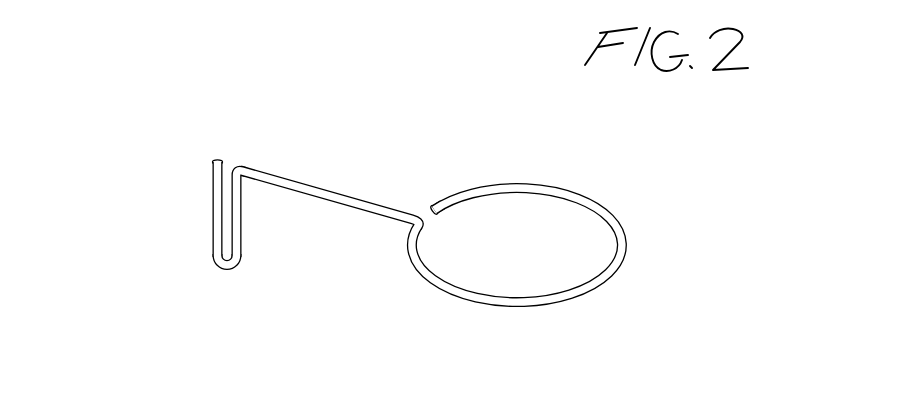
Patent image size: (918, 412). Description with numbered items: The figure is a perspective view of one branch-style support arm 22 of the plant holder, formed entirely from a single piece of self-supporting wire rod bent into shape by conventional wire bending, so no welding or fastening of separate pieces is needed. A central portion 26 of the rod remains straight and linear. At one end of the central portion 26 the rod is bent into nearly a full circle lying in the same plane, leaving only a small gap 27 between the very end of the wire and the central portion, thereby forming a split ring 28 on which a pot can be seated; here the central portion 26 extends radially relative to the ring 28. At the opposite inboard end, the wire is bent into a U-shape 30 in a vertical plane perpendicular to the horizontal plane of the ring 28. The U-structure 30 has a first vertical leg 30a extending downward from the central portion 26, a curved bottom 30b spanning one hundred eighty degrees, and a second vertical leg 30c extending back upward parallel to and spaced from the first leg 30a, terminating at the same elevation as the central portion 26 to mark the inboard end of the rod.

The branch-style support arm 22 is at (403, 94).
The central portion 26 is at (333, 188).
The gap 27 is at (427, 208).
The split ring 28 is at (550, 188).
The U-shape 30 is at (219, 288).
The first vertical leg 30a is at (242, 215).
The curved bottom 30b is at (223, 271).
The second vertical leg 30c is at (212, 209).